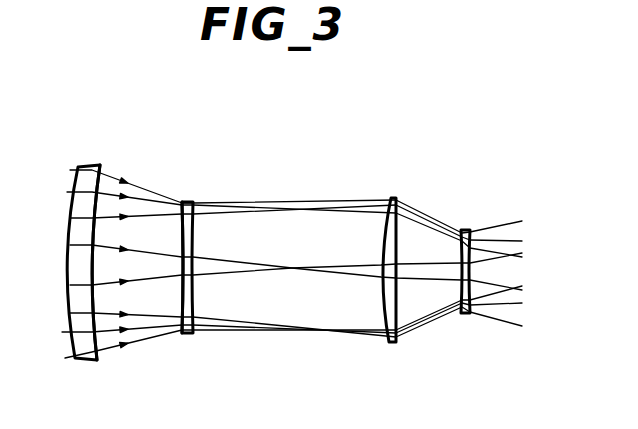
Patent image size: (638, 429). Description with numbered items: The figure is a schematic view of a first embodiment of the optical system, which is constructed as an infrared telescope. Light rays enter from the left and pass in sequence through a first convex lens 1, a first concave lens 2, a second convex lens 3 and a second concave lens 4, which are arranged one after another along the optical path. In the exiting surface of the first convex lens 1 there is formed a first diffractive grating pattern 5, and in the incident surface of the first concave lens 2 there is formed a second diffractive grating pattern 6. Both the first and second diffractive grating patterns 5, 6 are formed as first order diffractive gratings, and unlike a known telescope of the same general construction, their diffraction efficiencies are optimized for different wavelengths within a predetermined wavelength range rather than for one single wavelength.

The first convex lens 1 is at (86, 166).
The first concave lens 2 is at (187, 201).
The second convex lens 3 is at (386, 228).
The second concave lens 4 is at (465, 231).
The first diffractive grating pattern 5 is at (100, 189).
The second diffractive grating pattern 6 is at (179, 308).